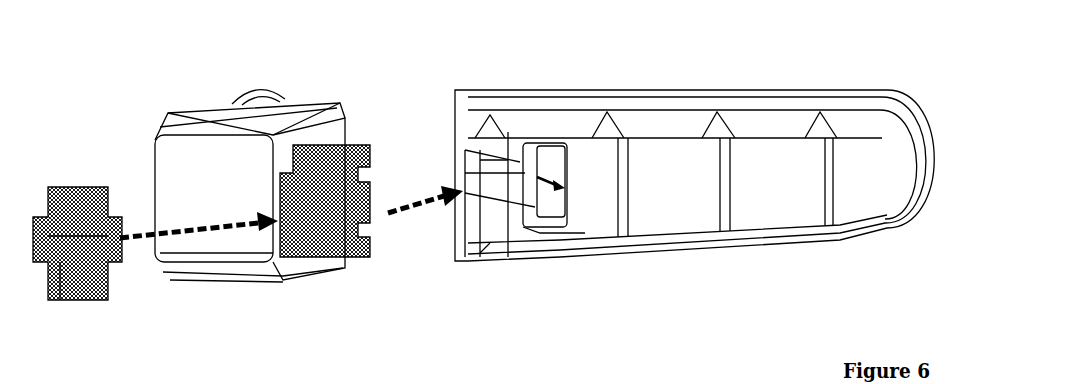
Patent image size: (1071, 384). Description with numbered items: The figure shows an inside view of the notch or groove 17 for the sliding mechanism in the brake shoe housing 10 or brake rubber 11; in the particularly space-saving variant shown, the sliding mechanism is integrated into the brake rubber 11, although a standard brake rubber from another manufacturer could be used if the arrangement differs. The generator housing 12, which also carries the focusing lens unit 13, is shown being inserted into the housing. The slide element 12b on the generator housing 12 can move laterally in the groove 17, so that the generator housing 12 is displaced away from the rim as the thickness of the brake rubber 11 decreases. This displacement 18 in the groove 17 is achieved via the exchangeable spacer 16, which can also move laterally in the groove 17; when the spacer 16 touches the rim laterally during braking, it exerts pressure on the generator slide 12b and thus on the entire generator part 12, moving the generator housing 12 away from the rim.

The brake shoe housing 10 is at (457, 95).
The brake rubber 11 is at (780, 140).
The generator housing 12 is at (160, 127).
The slide element 12b is at (360, 140).
The focusing lens unit 13 is at (240, 100).
The exchangeable spacer 16 is at (107, 283).
The groove 17 is at (460, 267).
The displacement 18 is at (540, 178).